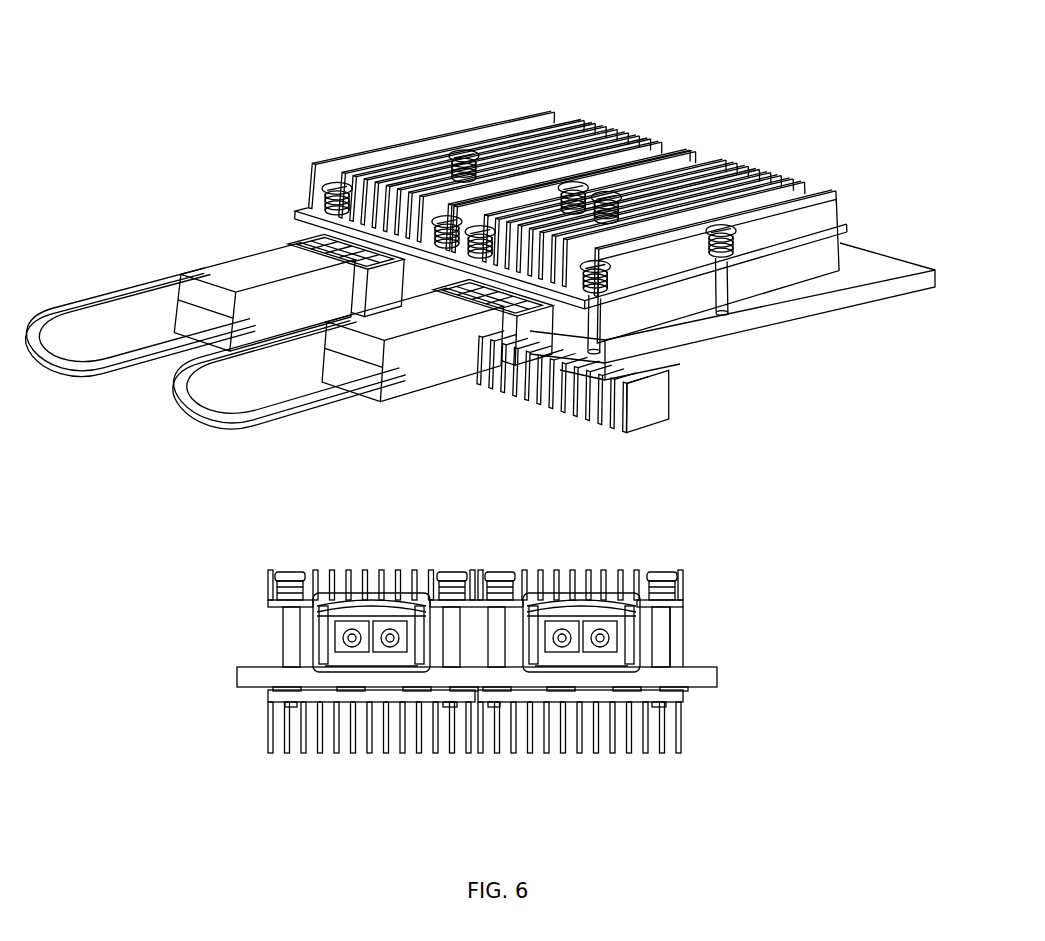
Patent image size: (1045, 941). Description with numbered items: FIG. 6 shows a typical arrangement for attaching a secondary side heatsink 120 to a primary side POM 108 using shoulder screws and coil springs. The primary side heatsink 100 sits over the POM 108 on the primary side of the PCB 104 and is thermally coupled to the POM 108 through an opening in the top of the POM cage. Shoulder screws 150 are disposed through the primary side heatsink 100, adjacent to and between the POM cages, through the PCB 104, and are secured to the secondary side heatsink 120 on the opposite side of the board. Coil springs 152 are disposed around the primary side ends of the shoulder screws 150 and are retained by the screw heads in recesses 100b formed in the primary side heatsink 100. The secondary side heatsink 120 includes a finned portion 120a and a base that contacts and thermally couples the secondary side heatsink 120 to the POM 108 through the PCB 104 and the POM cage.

The primary side heatsink 100 is at (488, 419).
The recesses 100b is at (498, 370).
The PCB 104 is at (593, 522).
The POM 108 is at (400, 402).
The secondary side heatsink 120 is at (387, 579).
The finned portion 120a is at (298, 566).
The shoulder screws 150 is at (458, 475).
The coil springs 152 is at (495, 384).